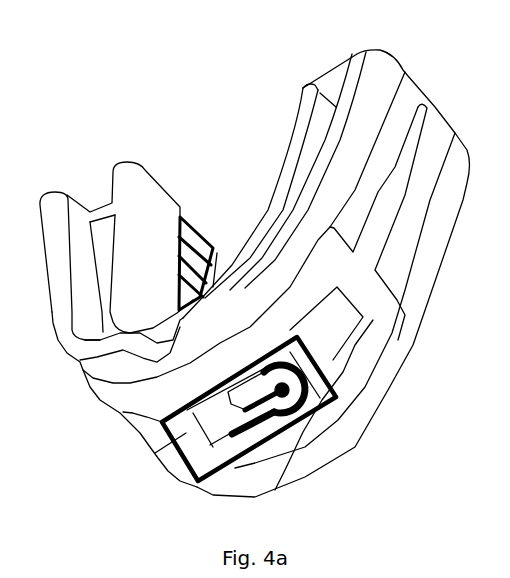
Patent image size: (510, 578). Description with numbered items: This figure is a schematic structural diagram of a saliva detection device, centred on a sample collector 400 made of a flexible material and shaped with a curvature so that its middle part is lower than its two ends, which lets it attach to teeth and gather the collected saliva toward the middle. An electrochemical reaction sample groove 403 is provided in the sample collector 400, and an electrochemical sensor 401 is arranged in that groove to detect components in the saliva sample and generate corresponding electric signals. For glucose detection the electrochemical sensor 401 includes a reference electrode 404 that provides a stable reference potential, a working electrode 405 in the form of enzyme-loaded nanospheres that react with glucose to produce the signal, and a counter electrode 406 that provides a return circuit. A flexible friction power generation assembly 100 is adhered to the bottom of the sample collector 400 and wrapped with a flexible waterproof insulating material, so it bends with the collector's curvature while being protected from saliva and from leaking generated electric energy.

The sample collector 400 is at (330, 144).
The electrochemical sensor 401 is at (355, 370).
The electrochemical reaction sample groove 403 is at (103, 232).
The reference electrode 404 is at (158, 416).
The working electrode 405 is at (157, 456).
The counter electrode 406 is at (275, 443).
The flexible friction power generation assembly 100 is at (192, 222).